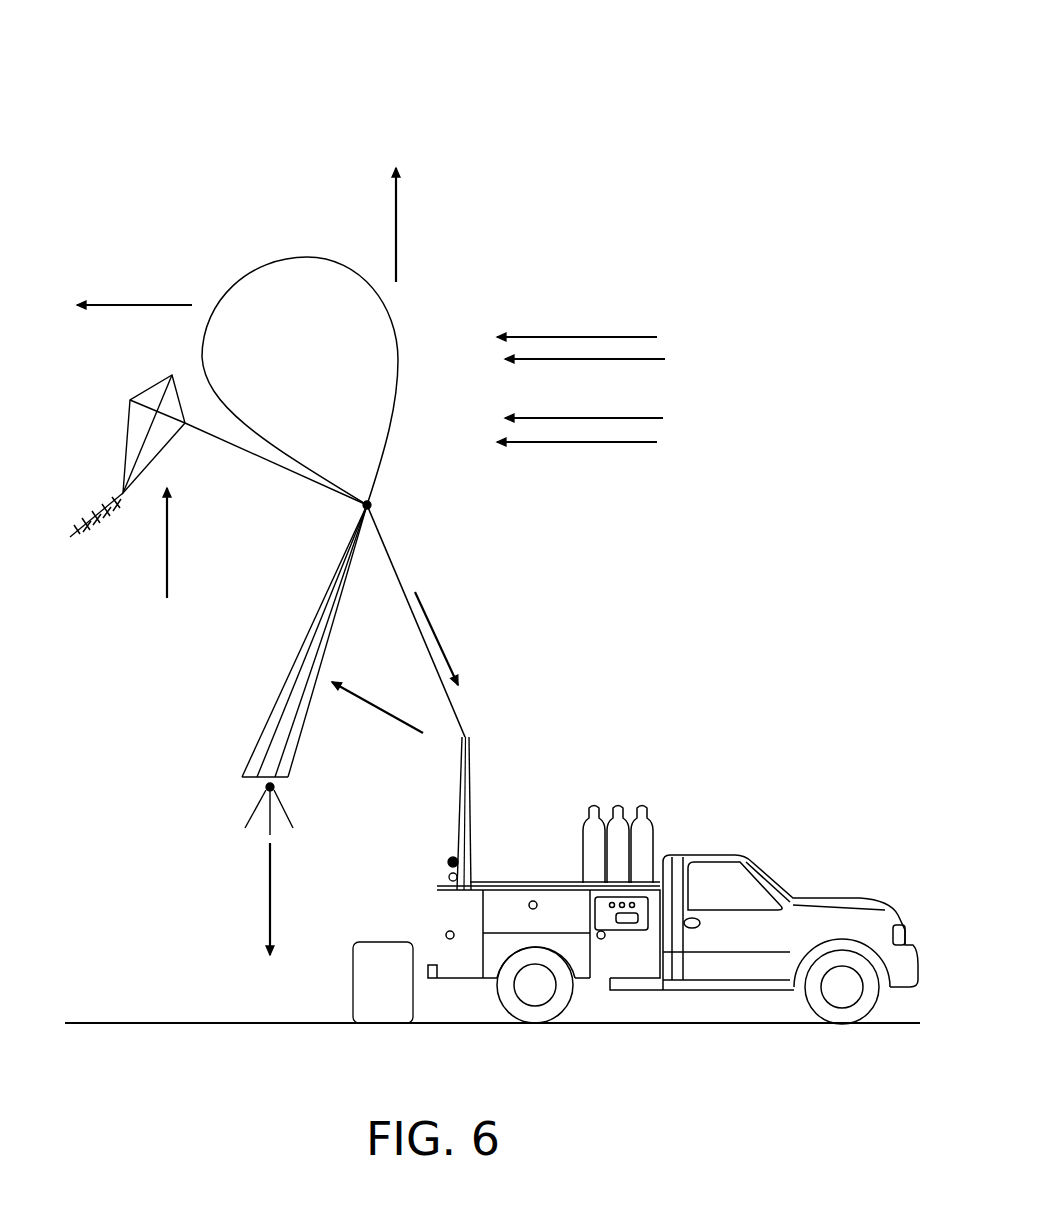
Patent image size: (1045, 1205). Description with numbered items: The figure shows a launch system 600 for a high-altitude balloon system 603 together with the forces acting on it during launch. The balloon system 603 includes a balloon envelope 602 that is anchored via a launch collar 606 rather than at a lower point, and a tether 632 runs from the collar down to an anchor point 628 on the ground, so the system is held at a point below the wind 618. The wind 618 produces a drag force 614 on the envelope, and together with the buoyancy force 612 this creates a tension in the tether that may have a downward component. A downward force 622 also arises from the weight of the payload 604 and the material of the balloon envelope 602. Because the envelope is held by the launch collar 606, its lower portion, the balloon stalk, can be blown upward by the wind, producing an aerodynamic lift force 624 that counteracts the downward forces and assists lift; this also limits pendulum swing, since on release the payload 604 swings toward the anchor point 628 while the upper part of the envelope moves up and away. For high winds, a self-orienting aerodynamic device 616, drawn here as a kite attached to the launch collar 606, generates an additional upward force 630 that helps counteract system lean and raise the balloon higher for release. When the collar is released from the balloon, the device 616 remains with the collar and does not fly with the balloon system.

The launch system 600 is at (697, 83).
The balloon envelope 602 is at (289, 381).
The high-altitude balloon system 603 is at (530, 555).
The payload 604 is at (258, 798).
The launch collar 606 is at (372, 505).
The buoyancy force 612 is at (400, 247).
The drag force 614 is at (143, 302).
The self-orienting aerodynamic device 616 is at (128, 447).
The wind 618 is at (610, 337).
The downward force 622 is at (270, 907).
The aerodynamic lift force 624 is at (387, 707).
The anchor point 628 is at (467, 737).
The upward force 630 is at (167, 572).
The tether 632 is at (395, 573).